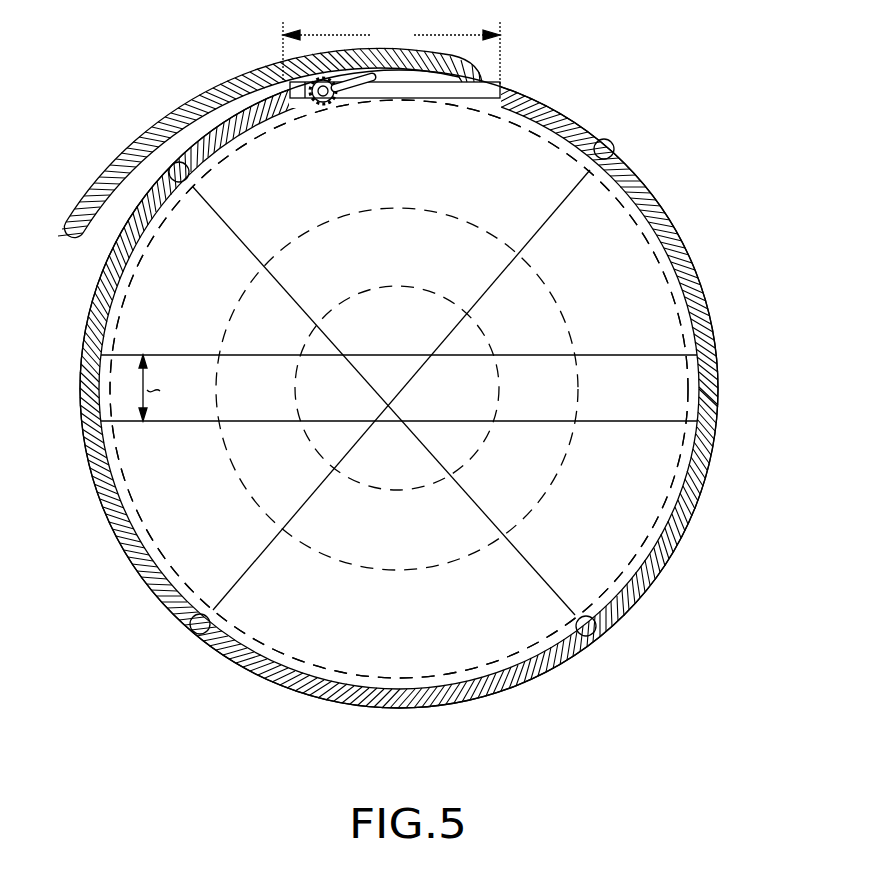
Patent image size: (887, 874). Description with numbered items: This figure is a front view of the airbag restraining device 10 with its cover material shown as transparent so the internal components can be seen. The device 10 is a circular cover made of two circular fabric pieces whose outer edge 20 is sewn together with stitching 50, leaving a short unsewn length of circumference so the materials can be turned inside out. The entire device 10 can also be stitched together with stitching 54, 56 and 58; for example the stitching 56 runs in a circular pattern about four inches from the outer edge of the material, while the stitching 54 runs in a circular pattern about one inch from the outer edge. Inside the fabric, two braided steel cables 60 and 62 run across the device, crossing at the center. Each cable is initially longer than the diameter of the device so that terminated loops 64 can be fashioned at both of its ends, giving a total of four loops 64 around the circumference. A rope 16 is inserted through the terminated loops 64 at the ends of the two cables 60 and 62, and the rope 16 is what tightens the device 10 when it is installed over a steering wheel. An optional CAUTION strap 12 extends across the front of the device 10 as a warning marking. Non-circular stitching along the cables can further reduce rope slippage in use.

The device 10 is at (417, 181).
The CAUTION strap 12 is at (598, 403).
The rope 16 is at (185, 105).
The outer edge 20 is at (247, 678).
The stitching 50 is at (705, 480).
The stitching 54 is at (676, 470).
The stitching 56 is at (575, 452).
The stitching 58 is at (487, 452).
The cable 60 is at (312, 292).
The cable 62 is at (556, 210).
The terminated loops 64 is at (610, 142).